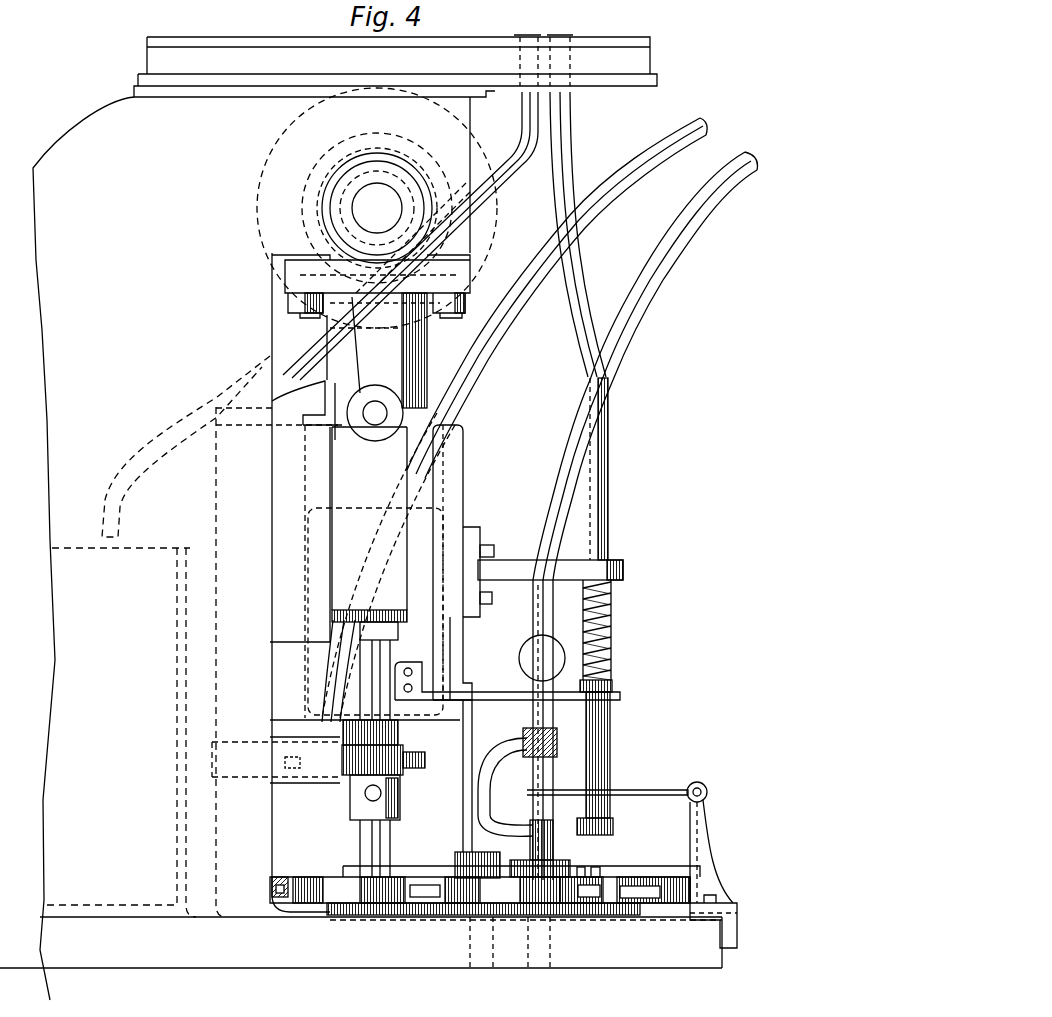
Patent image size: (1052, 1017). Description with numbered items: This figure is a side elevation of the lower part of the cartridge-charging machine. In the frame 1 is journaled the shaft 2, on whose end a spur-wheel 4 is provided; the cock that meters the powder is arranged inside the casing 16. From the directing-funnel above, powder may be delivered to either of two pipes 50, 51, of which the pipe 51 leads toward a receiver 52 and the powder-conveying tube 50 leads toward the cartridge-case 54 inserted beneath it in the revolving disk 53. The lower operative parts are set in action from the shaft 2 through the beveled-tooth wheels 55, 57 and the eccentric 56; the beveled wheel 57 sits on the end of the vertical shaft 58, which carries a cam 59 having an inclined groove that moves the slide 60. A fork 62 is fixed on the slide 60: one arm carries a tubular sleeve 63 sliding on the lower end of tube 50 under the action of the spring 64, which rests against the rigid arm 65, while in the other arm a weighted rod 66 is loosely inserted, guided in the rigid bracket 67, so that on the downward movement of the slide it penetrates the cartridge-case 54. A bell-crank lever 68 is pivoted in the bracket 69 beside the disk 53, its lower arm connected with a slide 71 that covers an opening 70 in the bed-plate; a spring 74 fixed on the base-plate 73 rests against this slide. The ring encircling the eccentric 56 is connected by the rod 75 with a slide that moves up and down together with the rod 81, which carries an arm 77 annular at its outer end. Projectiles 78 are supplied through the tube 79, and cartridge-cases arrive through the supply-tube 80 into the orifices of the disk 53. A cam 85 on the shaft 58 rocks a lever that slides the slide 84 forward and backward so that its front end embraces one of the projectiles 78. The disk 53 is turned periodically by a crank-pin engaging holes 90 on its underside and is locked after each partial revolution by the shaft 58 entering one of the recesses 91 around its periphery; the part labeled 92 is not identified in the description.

The frame 1 is at (58, 383).
The shaft 2 is at (377, 208).
The spur-wheel 4 is at (497, 215).
The casing 16 is at (405, 560).
The pipe 50 is at (570, 115).
The pipe 51 is at (512, 118).
The receiver 52 is at (178, 692).
The revolving disk 53 is at (648, 877).
The cartridge-case 54 is at (425, 870).
The beveled-tooth wheel 55 is at (384, 148).
The eccentric 56 is at (330, 146).
The beveled-tooth wheel 57 is at (312, 274).
The vertical shaft 58 is at (352, 455).
The cam 59 is at (463, 642).
The slide 60 is at (430, 445).
The fork 62 is at (490, 705).
The tubular sleeve 63 is at (610, 733).
The spring 64 is at (612, 600).
The rigid arm 65 is at (500, 568).
The weighted rod 66 is at (532, 668).
The rigid bracket 67 is at (462, 752).
The bell-crank lever 68 is at (640, 785).
The bracket 69 is at (712, 833).
The opening 70 is at (548, 946).
The slide 71 is at (632, 930).
The base-plate 73 is at (725, 958).
The spring 74 is at (740, 927).
The rod 75 is at (364, 350).
The arm 77 is at (400, 797).
The projectile 78 is at (325, 777).
The tube 79 is at (642, 152).
The supply-tube 80 is at (712, 222).
The rod 81 is at (398, 730).
The slide 84 is at (284, 762).
The cam 85 is at (425, 768).
The holes 90 is at (280, 905).
The recesses 91 is at (378, 912).
The base 92 is at (474, 955).